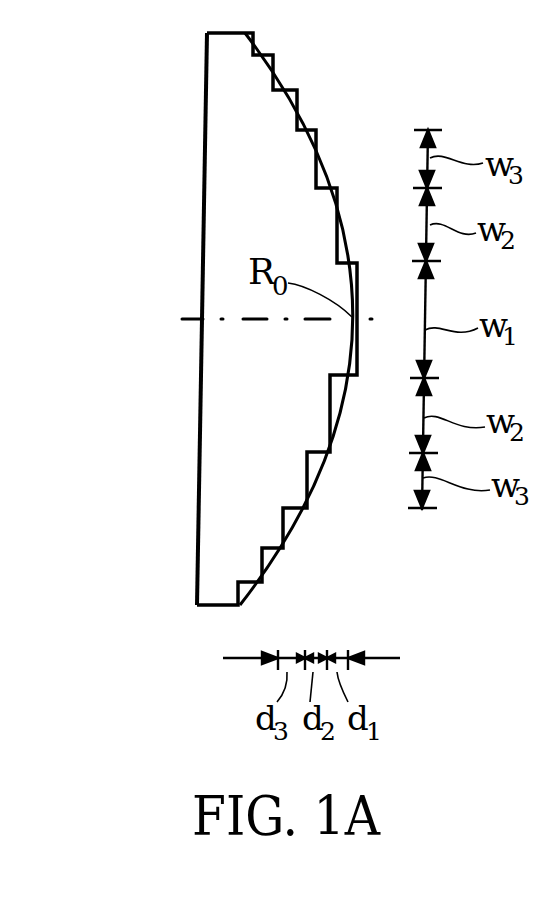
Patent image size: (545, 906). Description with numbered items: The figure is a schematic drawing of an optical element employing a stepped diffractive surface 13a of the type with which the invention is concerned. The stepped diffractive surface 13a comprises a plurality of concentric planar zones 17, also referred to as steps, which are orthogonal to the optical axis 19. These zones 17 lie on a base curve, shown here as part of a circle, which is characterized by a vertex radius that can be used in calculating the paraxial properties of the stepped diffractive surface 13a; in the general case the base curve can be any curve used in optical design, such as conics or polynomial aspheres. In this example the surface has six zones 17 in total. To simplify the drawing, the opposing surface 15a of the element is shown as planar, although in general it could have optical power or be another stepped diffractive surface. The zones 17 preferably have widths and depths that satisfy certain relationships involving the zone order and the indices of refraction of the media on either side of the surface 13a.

The concentric planar zones 17 is at (295, 96).
The optical axis 19 is at (313, 321).
The opposing surface 15a is at (199, 485).
The stepped diffractive surface 13a is at (312, 493).